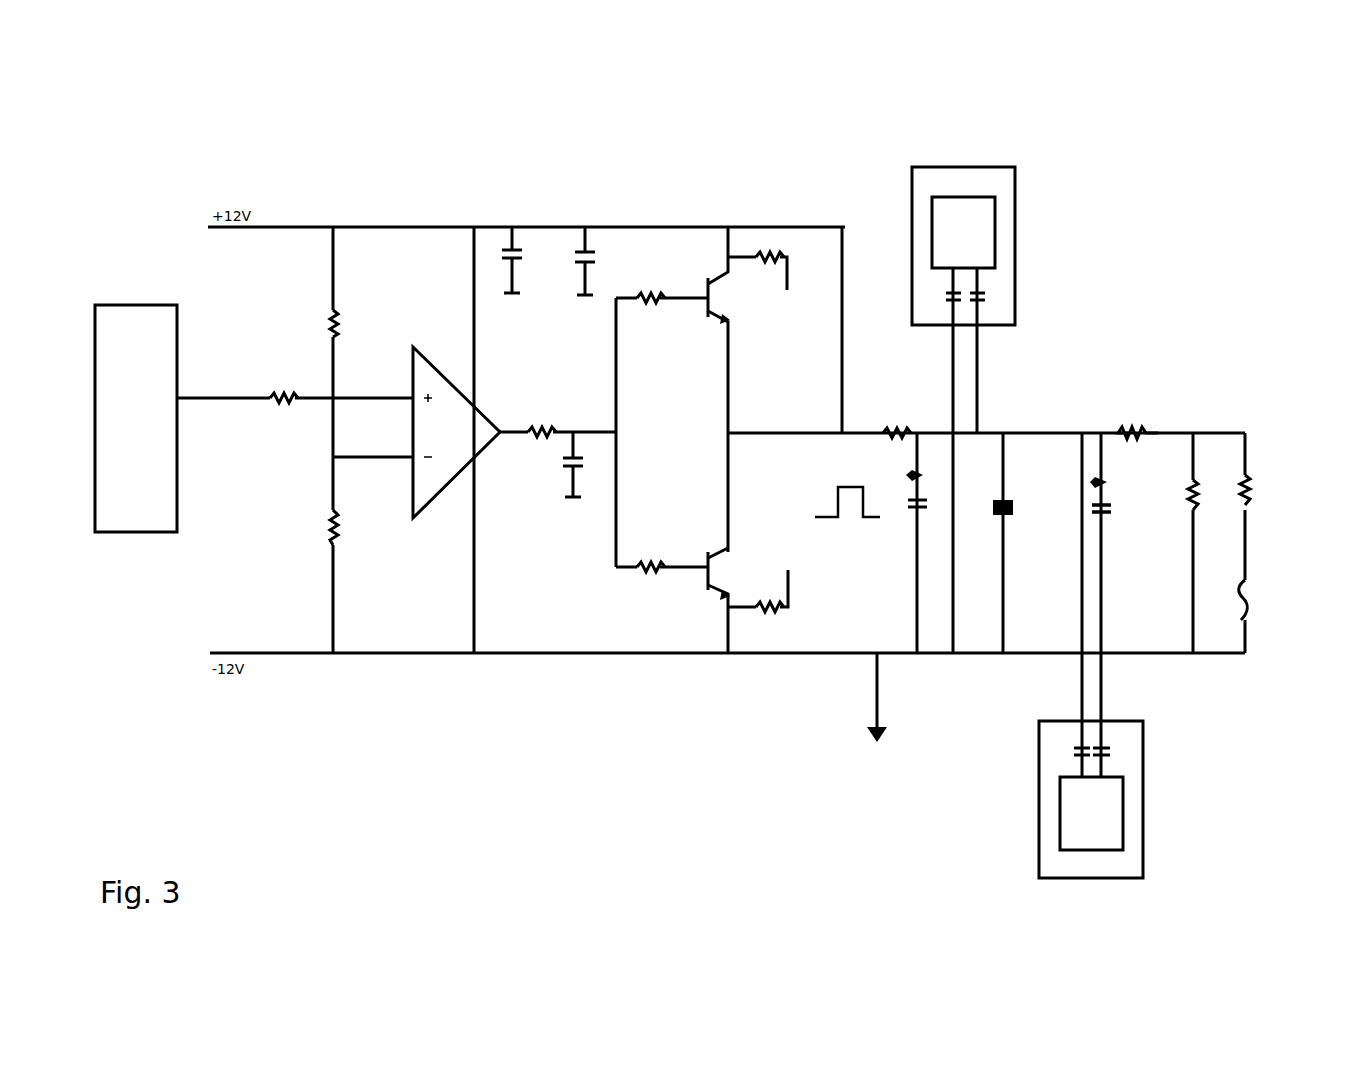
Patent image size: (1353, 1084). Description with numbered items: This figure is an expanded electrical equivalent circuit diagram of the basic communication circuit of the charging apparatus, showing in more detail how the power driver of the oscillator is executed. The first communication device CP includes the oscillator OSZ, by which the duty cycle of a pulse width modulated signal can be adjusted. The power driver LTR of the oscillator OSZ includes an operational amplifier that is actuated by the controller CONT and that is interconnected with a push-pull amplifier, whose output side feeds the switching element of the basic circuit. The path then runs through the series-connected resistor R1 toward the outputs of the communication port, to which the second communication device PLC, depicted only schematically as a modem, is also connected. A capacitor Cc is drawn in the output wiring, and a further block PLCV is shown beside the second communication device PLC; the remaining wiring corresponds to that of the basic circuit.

The controller CONT is at (127, 534).
The first communication device CP is at (432, 748).
The oscillator OSZ is at (540, 208).
The power driver LTR is at (740, 196).
The resistor R1 is at (895, 415).
The coupling capacitor Cc is at (1121, 515).
The second communication device PLC is at (1015, 265).
The piezo load capacitor voltage PLCV is at (1143, 796).